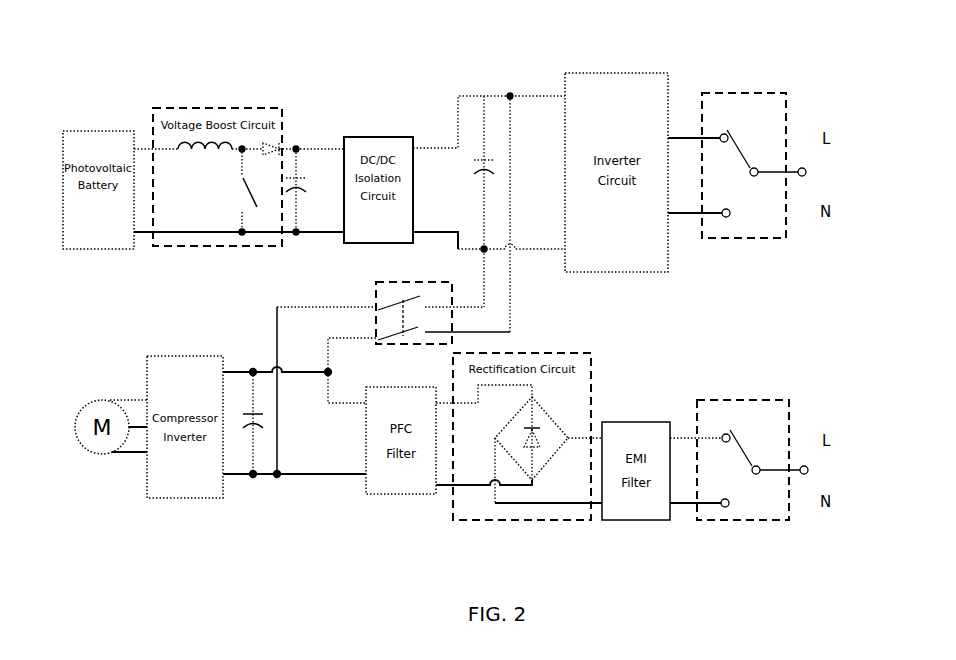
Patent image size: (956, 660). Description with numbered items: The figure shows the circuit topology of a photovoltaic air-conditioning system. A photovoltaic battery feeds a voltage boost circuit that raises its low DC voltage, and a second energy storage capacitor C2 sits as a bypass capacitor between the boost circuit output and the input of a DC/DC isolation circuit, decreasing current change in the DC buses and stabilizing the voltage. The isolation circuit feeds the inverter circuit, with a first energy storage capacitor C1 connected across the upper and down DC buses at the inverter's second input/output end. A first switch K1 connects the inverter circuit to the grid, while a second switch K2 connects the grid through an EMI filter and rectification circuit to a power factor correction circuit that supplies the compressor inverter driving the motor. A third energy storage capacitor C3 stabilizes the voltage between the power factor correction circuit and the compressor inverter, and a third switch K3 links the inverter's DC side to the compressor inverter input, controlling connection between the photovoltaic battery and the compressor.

The first energy storage capacitor C1 is at (493, 201).
The second energy storage capacitor C2 is at (304, 190).
The third energy storage capacitor C3 is at (247, 423).
The first switch K1 is at (737, 165).
The second switch K2 is at (739, 460).
The third switch K3 is at (393, 327).